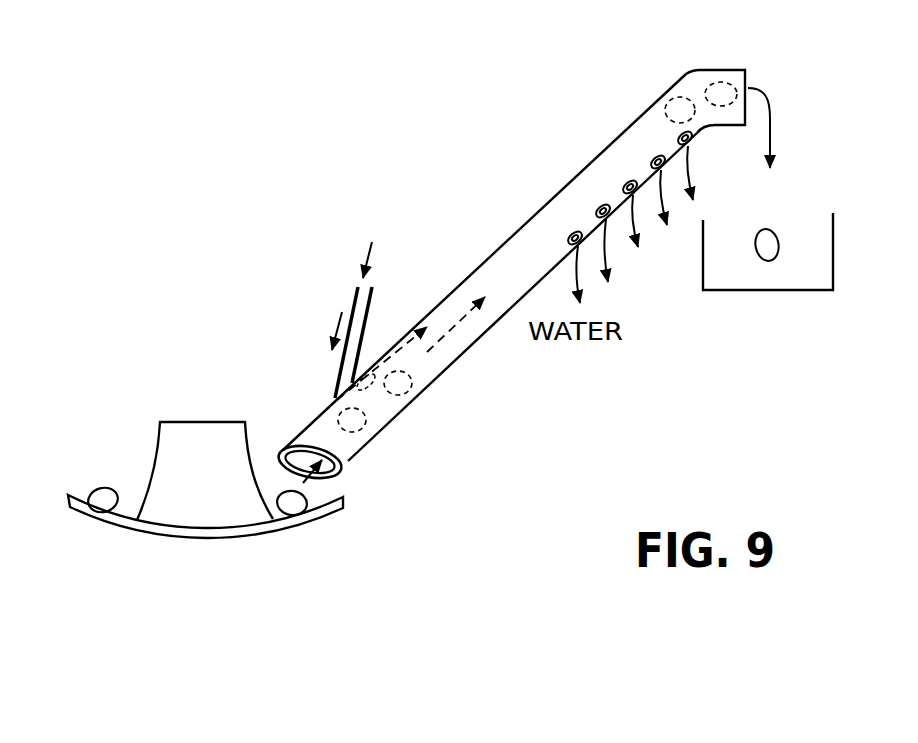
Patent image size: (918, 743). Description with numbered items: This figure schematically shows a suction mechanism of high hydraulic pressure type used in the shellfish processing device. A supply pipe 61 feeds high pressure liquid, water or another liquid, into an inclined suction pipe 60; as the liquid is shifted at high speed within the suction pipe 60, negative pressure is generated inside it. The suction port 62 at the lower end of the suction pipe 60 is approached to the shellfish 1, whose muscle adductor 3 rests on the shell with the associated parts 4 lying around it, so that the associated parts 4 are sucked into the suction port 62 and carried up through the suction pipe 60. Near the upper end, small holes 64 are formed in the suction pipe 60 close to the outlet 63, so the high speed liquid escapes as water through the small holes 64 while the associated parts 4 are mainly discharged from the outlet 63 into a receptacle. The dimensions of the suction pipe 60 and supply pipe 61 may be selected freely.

The shellfish 1 is at (208, 537).
The muscle adductor 3 is at (207, 443).
The associated parts 4 is at (100, 508).
The suction pipe 60 is at (600, 150).
The supply pipe 61 is at (352, 303).
The suction port 62 is at (330, 475).
The outlet 63 is at (748, 70).
The small holes 64 is at (629, 183).